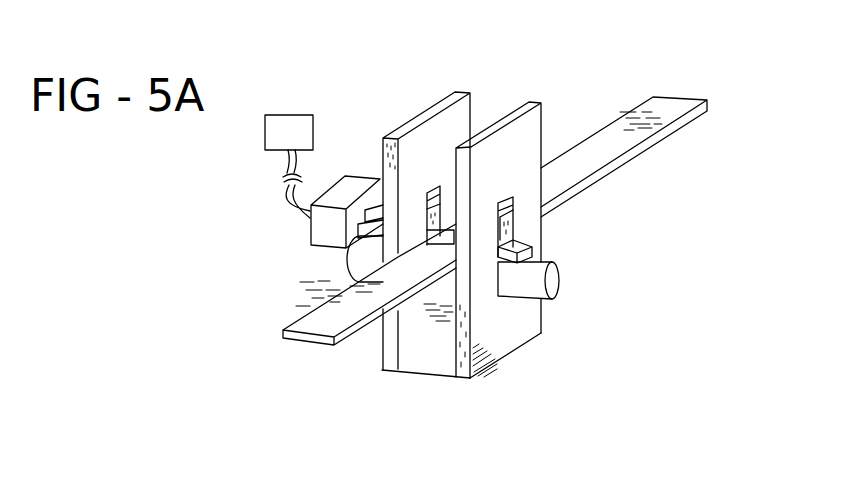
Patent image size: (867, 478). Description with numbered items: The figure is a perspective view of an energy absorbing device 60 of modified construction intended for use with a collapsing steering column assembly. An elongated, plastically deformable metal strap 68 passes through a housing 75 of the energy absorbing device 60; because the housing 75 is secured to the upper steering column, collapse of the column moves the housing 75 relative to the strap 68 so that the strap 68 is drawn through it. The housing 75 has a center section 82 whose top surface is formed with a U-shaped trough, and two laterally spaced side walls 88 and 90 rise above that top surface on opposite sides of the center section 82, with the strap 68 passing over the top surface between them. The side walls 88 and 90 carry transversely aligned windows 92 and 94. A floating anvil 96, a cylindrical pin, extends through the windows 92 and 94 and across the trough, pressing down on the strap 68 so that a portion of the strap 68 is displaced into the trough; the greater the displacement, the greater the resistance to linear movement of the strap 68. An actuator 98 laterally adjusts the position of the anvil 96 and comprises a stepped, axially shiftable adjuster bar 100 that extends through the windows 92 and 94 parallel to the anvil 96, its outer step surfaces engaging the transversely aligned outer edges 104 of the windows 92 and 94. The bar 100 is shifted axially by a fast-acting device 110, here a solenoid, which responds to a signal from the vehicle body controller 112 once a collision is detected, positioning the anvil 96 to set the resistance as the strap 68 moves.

The energy absorbing device 60 is at (516, 228).
The strap 68 is at (662, 100).
The housing 75 is at (511, 355).
The center section 82 is at (440, 378).
The side wall 88 is at (427, 111).
The side wall 90 is at (520, 110).
The window 92 is at (441, 190).
The window 94 is at (514, 204).
The floating anvil 96 is at (554, 283).
The actuator 98 is at (322, 259).
The adjuster bar 100 is at (547, 246).
The outer edges 104 is at (428, 192).
The fast-acting device 110 is at (358, 185).
The controller 112 is at (289, 166).